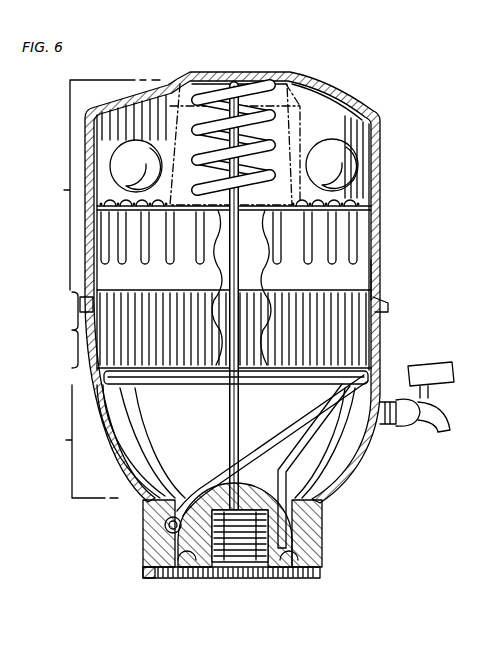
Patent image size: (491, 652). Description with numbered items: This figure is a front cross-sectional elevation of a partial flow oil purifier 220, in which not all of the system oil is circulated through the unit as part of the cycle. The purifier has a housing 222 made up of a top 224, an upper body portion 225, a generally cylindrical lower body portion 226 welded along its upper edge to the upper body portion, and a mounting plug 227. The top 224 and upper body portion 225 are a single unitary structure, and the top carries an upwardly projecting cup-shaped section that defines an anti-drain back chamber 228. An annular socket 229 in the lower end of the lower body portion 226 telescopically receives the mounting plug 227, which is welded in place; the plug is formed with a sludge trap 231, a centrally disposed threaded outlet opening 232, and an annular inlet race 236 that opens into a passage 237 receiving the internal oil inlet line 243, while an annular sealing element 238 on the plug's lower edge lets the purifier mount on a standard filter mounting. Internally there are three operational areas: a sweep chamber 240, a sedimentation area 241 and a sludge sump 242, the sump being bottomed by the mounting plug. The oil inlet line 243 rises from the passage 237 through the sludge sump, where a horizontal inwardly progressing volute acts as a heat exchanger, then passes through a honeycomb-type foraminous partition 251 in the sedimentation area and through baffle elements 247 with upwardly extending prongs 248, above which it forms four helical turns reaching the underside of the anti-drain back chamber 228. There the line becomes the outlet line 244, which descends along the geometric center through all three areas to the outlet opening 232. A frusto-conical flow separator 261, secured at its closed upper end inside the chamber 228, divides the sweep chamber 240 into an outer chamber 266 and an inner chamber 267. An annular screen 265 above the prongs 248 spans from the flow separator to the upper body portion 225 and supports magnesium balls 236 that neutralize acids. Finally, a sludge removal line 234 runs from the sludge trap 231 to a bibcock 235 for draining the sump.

The purifier 220 is at (315, 62).
The housing 222 is at (388, 113).
The top 224 is at (360, 98).
The upper body portion 225 is at (382, 272).
The lower body portion 226 is at (118, 480).
The mounting plug 227 is at (153, 566).
The anti-drain back chamber 228 is at (250, 70).
The annular socket 229 is at (173, 505).
The sludge trap 231 is at (148, 545).
The threaded outlet opening 232 is at (230, 562).
The sludge removal line 234 is at (275, 432).
The bibcock 235 is at (400, 426).
The magnesium balls 236 is at (338, 162).
The passage 237 is at (284, 562).
The annular sealing element 238 is at (322, 575).
The sweep chamber 240 is at (90, 185).
The sedimentation area 241 is at (53, 330).
The sludge sump 242 is at (190, 441).
The oil inlet line 243 is at (263, 316).
The outlet line 244 is at (229, 424).
The baffle elements 247 is at (345, 247).
The prongs 248 is at (66, 251).
The foraminous partition 251 is at (355, 336).
The flow separator 261 is at (324, 95).
The annular screen 265 is at (358, 197).
The outer chamber 266 is at (355, 133).
The inner chamber 267 is at (215, 82).